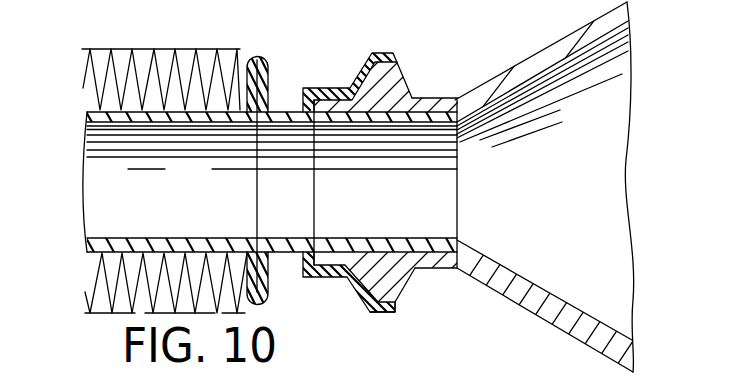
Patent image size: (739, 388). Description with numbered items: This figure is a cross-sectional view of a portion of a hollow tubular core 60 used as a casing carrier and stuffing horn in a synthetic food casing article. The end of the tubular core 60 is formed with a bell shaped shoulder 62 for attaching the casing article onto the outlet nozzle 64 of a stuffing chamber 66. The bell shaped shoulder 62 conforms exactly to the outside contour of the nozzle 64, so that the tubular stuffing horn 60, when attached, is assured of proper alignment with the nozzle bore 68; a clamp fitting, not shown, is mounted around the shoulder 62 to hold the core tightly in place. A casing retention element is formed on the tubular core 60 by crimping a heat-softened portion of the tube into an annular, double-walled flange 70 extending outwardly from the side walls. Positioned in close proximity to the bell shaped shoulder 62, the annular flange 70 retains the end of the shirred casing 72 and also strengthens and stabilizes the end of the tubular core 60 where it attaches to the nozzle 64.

The tubular core 60 is at (86, 114).
The bell shaped shoulder 62 is at (348, 88).
The outlet nozzle 64 is at (402, 95).
The stuffing chamber 66 is at (617, 98).
The nozzle bore 68 is at (421, 220).
The annular double-walled flange 70 is at (263, 65).
The shirred casing 72 is at (200, 49).